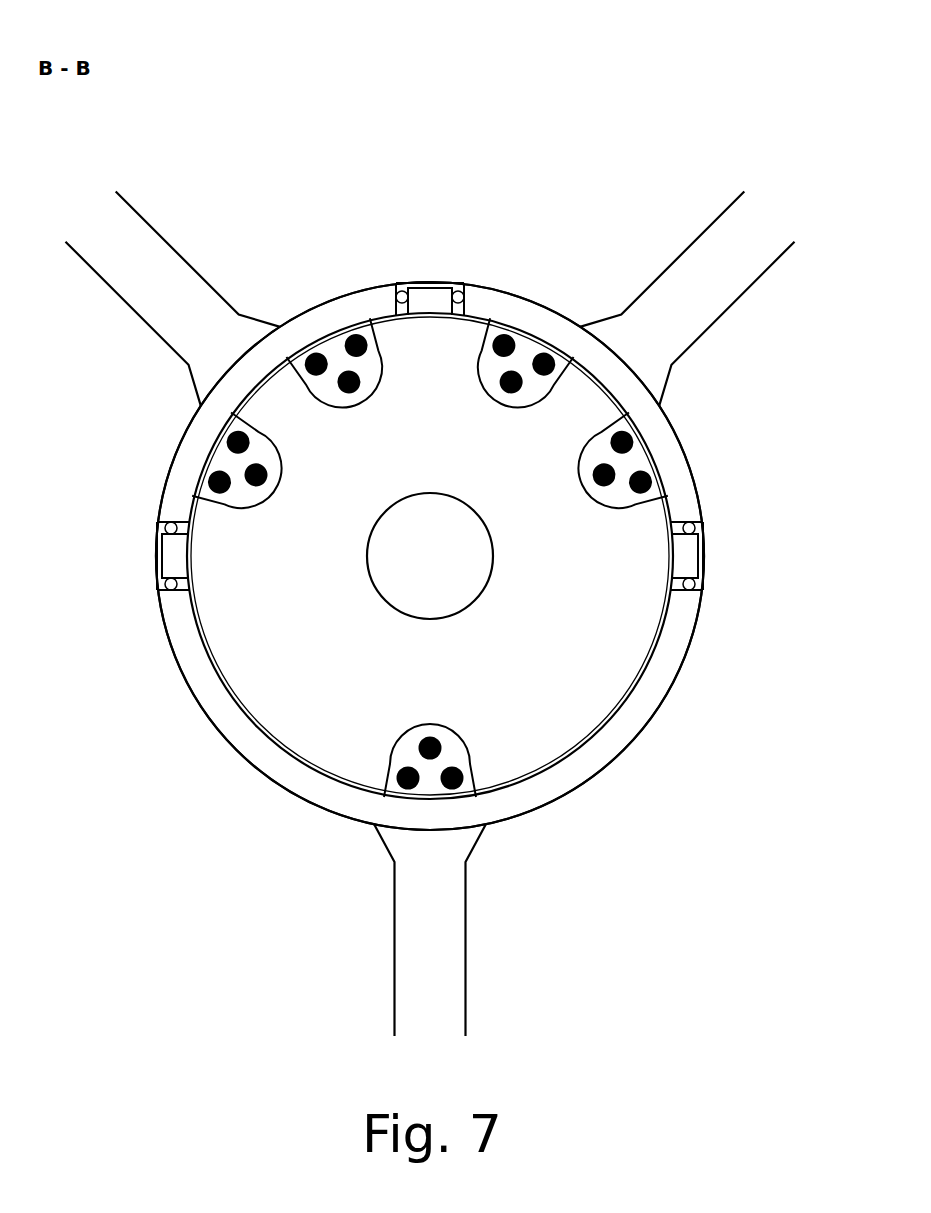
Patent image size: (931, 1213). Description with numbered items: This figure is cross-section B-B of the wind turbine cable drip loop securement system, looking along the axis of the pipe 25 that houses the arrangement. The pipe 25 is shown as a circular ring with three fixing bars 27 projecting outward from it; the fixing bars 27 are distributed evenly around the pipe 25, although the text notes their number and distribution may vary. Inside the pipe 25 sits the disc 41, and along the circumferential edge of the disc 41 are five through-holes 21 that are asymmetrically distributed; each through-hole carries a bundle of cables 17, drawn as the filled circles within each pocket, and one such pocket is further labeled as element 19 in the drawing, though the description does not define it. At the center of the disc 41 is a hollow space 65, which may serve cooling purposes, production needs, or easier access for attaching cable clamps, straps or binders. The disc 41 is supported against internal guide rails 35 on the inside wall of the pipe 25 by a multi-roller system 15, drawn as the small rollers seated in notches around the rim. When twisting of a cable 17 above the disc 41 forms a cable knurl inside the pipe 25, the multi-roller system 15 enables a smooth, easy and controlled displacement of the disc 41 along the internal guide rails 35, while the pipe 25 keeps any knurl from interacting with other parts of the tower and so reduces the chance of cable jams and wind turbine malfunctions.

The multi-roller system 15 is at (122, 584).
The cable 17 is at (418, 745).
The fiber holding pockets 19 is at (262, 532).
The through-holes 21 is at (378, 314).
The pipe 25 is at (198, 712).
The fixing bars 27 is at (134, 312).
The internal guide rails 35 is at (705, 531).
The disc 41 is at (447, 459).
The hollow space 65 is at (487, 594).